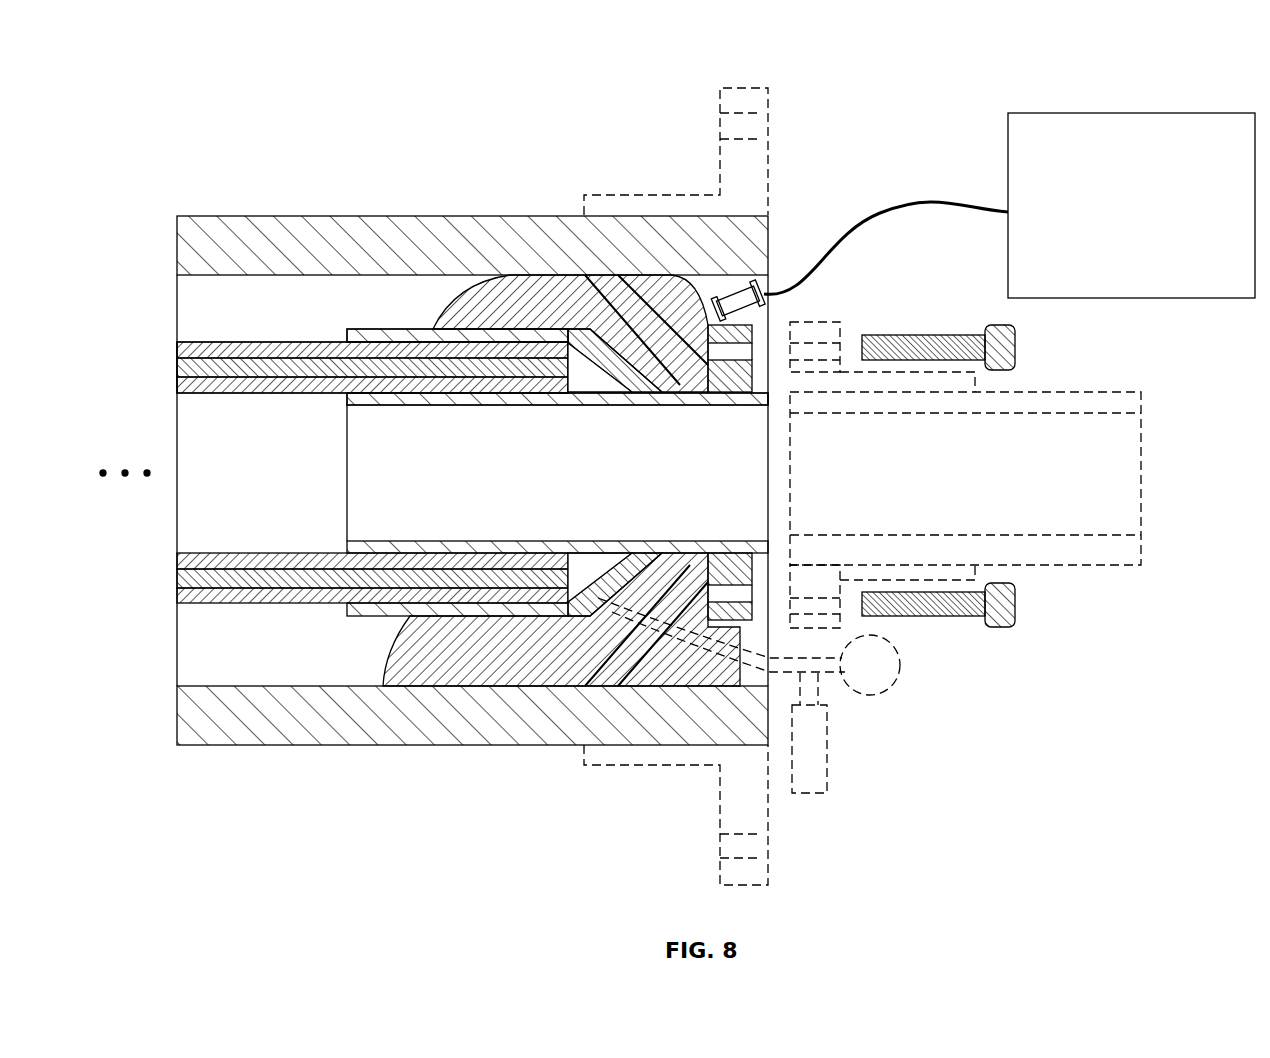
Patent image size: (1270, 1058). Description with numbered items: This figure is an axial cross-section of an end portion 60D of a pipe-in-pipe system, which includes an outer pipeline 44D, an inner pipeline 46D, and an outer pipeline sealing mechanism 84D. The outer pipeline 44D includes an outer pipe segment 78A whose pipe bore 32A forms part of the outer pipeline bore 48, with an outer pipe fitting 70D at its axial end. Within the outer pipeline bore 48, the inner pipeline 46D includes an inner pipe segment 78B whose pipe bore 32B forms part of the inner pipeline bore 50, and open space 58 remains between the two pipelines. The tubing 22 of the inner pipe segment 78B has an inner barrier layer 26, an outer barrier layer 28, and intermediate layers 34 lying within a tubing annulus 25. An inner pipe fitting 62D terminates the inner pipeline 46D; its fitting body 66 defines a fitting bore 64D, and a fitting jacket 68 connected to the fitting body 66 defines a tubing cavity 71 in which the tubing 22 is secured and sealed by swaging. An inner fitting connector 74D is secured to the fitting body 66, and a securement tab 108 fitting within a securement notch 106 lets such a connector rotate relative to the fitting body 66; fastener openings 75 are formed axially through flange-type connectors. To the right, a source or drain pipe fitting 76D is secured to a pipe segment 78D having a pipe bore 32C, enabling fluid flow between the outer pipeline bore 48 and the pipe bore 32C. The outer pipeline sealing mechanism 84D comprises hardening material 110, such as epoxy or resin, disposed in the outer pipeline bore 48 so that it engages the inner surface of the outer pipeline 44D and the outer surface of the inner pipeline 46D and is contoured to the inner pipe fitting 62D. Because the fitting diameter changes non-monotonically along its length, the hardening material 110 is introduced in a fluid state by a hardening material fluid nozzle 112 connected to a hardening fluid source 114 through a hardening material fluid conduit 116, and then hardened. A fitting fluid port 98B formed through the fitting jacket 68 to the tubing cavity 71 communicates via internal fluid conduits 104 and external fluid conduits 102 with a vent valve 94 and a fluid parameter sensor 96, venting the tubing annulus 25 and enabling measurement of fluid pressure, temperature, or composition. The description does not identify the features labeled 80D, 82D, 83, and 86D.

The end portion of a pipe-in-pipe system 60D is at (160, 120).
The outer pipe segment 78A is at (290, 216).
The outer pipeline 44D is at (512, 200).
The upper fluid passage 80D is at (720, 168).
The outer pipe fitting 70D is at (712, 776).
The fastener openings 75 is at (746, 126).
The hardening fluid source 114 is at (1078, 112).
The hardening material fluid conduits 116 is at (942, 205).
The hardening material fluid nozzle 112 is at (765, 285).
The outer pipeline sealing mechanism 84D is at (768, 240).
The fastener passage 82D is at (815, 323).
The source or drain pipe fitting 76D is at (915, 358).
The fastener head 83 is at (1020, 350).
The fitting body 66 is at (942, 617).
The pipe segment 78D is at (1135, 392).
The pipe bore of the source or drain pipe segment 32C is at (1070, 478).
The inner pipe segment 78B is at (218, 343).
The outer barrier layer 28 is at (175, 345).
The tubing annulus 25 is at (172, 344).
The inner barrier layer 26 is at (175, 392).
The tubing 22 is at (172, 554).
The intermediate layers 34 is at (256, 372).
The inner pipeline 46D is at (318, 322).
The outer pipeline bore 48 is at (362, 315).
The pipe bore of the outer pipe segment 32A is at (421, 315).
The hardening material 110 is at (576, 315).
The inner fitting connector 74D is at (655, 388).
The fitting fluid port 98B is at (590, 586).
The seal layer 86D is at (626, 400).
The tubing cavity 71 is at (583, 383).
The securement notch 106 is at (745, 398).
The internal fluid conduits 104 is at (662, 563).
The fitting bore 64D is at (470, 485).
The inner pipeline bore 50 is at (296, 485).
The pipe bore of the inner pipe segment 32B is at (258, 485).
The inner pipe fitting 62D is at (345, 622).
The fitting jacket 68 is at (368, 618).
The open space 58 is at (195, 640).
The securement tab 108 is at (776, 530).
The fluid parameter sensor 96 is at (898, 668).
The vent valve 94 is at (800, 795).
The external fluid conduits 102 is at (817, 675).